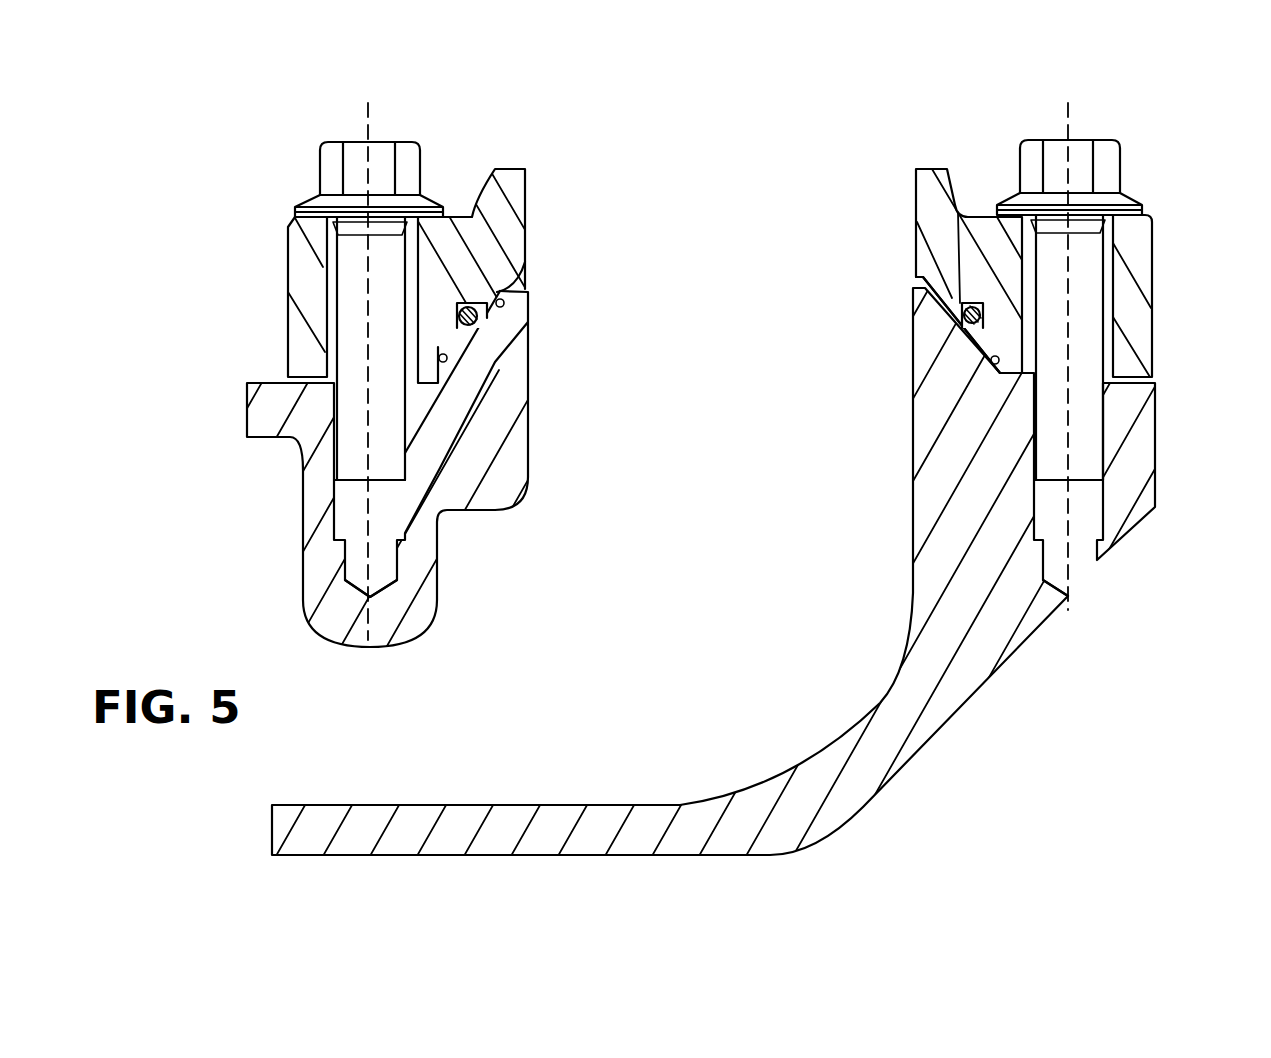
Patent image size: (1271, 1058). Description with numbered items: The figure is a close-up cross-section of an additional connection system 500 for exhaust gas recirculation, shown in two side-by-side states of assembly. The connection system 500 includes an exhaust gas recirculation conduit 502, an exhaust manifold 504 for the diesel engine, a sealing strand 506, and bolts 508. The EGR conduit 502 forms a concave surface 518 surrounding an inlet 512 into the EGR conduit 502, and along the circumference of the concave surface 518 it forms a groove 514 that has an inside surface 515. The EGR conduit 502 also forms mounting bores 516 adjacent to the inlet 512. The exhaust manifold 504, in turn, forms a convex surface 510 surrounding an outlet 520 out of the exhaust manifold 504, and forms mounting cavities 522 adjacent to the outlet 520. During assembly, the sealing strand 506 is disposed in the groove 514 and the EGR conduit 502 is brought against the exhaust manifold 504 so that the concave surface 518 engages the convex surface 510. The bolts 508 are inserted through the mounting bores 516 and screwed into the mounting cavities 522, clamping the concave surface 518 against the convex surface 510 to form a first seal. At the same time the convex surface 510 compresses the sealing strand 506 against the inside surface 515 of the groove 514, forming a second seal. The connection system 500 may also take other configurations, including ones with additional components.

The connection system 500 is at (1102, 81).
The exhaust gas recirculation conduit 502 is at (525, 223).
The exhaust manifold 504 is at (897, 748).
The sealing strand 506 is at (480, 318).
The bolts 508 is at (382, 165).
The convex surface 510 is at (437, 371).
The inlet 512 is at (770, 204).
The groove 514 is at (448, 356).
The inside surface 515 is at (448, 302).
The mounting bores 516 is at (330, 337).
The concave surface 518 is at (494, 298).
The outlet 520 is at (608, 677).
The mounting cavities 522 is at (363, 573).